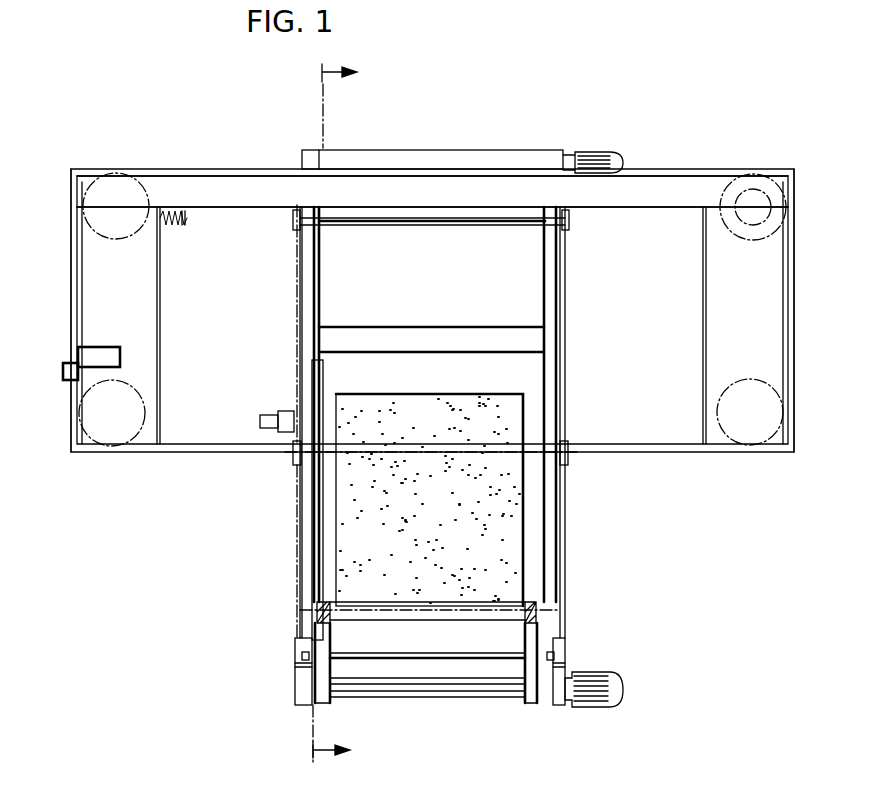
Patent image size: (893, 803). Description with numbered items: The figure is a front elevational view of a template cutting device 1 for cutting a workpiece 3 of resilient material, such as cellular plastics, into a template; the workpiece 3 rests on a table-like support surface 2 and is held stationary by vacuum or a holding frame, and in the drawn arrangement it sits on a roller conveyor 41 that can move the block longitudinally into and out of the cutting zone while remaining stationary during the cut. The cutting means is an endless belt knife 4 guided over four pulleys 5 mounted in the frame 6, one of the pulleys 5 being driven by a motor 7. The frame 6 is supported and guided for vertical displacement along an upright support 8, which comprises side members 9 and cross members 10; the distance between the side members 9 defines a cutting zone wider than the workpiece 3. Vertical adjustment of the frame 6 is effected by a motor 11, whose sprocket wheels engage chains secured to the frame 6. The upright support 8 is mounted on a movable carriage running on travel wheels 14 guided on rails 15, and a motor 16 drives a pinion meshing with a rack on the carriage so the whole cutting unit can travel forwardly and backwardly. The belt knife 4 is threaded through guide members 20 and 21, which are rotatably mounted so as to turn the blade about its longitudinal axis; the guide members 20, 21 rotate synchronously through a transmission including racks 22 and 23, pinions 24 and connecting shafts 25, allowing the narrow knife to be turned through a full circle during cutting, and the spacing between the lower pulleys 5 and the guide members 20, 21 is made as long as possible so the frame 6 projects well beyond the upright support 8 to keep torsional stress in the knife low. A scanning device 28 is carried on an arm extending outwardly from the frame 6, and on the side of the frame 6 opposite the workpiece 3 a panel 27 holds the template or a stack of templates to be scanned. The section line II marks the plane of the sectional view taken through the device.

The template cutting device 1 is at (469, 104).
The table-like support surface 2 is at (432, 310).
The workpiece 3 is at (523, 527).
The endless belt knife 4 is at (176, 170).
The pulleys 5 is at (117, 240).
The frame 6 is at (234, 186).
The motor 7 is at (753, 205).
The upright support 8 is at (342, 148).
The side members 9 is at (320, 262).
The cross members 10 is at (399, 167).
The motor 11 is at (601, 166).
The travel wheels 14 is at (302, 656).
The rails 15 is at (300, 667).
The motor 16 is at (598, 702).
The guide member 20 is at (293, 463).
The guide member 21 is at (567, 463).
The rack 22 is at (297, 291).
The rack 23 is at (568, 296).
The pinions 24 is at (293, 223).
The connecting shafts 25 is at (494, 227).
The panel 27 is at (312, 522).
The scanning device 28 is at (277, 408).
The roller conveyor 41 is at (431, 612).
The section line II is at (325, 415).